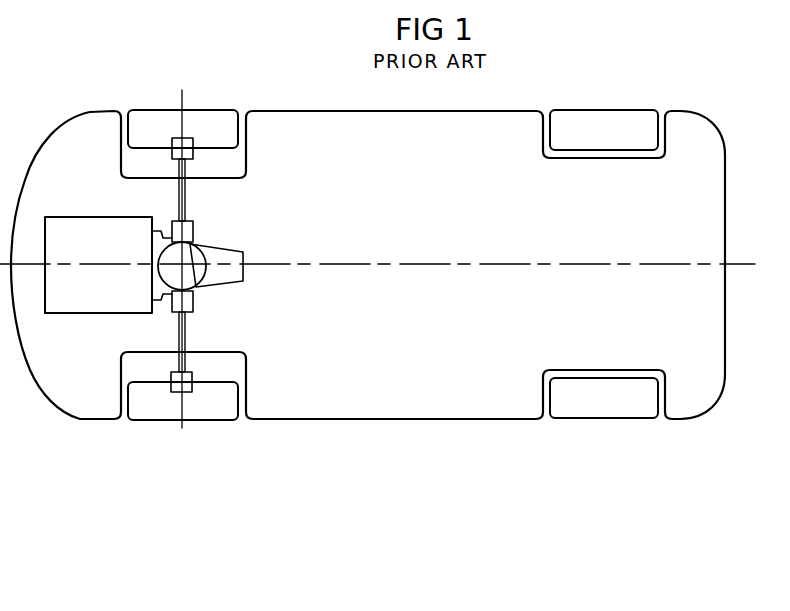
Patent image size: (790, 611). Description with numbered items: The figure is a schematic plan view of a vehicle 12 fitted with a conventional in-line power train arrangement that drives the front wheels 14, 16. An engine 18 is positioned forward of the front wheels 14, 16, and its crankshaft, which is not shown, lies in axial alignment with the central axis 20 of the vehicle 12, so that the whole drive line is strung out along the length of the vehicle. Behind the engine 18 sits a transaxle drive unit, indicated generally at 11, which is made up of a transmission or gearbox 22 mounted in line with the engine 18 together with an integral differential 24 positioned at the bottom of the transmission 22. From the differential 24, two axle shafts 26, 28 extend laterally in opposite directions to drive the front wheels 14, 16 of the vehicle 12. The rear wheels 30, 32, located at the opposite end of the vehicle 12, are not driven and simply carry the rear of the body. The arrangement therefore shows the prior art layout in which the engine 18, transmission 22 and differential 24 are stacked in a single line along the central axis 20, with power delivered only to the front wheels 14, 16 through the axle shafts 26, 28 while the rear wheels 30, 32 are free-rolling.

The transaxle drive unit 11 is at (230, 231).
The vehicle 12 is at (409, 215).
The front wheel 14 is at (155, 122).
The front wheel 16 is at (160, 412).
The engine 18 is at (108, 255).
The central axis 20 is at (508, 263).
The transmission 22 is at (230, 258).
The differential 24 is at (192, 277).
The axle shaft 26 is at (183, 322).
The axle shaft 28 is at (183, 213).
The rear wheel 30 is at (577, 130).
The rear wheel 32 is at (618, 398).